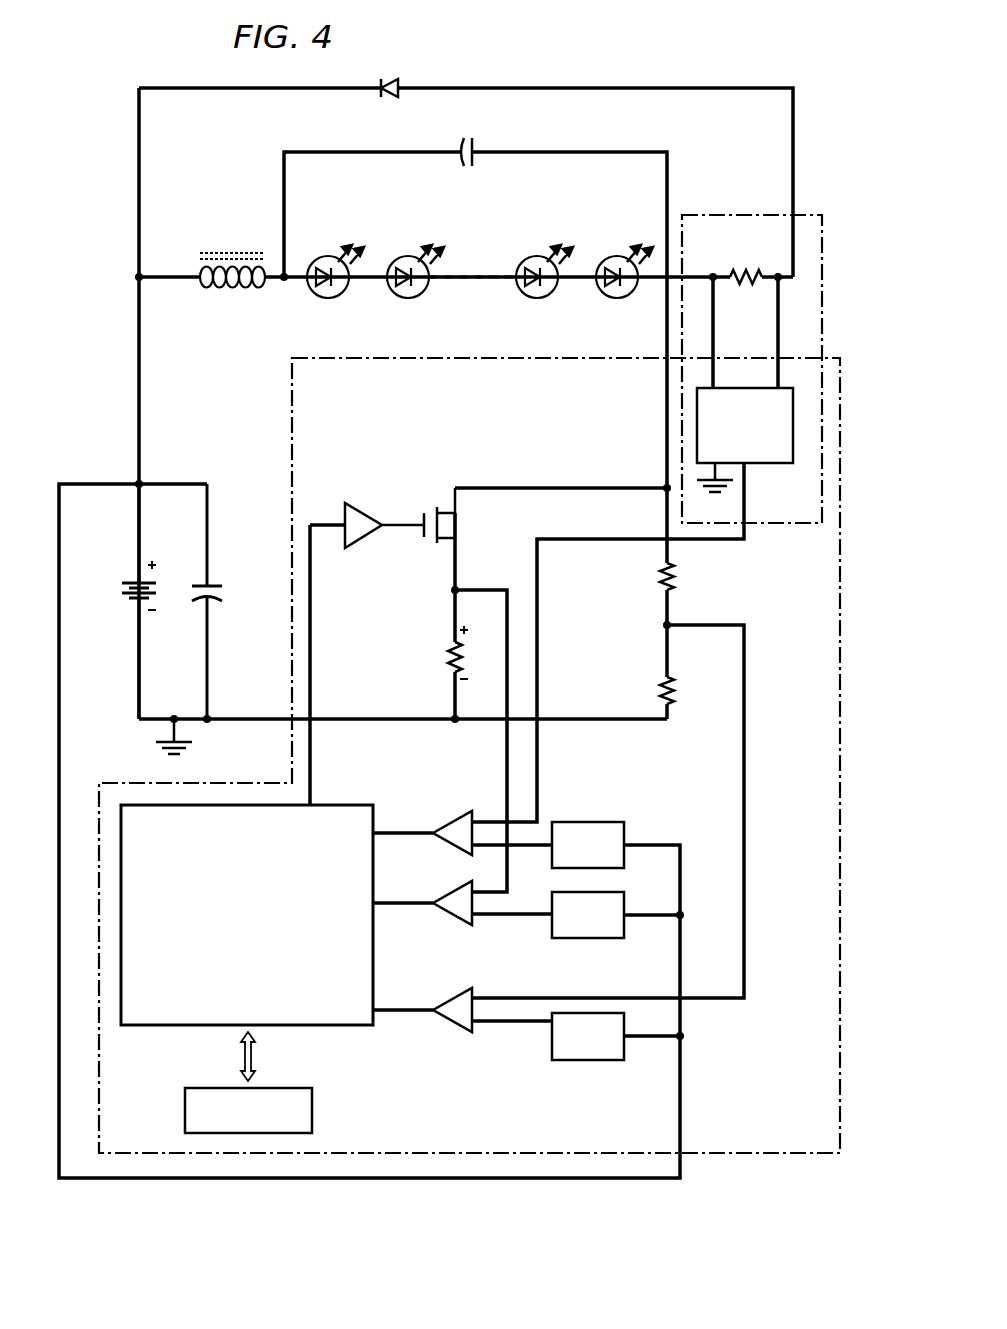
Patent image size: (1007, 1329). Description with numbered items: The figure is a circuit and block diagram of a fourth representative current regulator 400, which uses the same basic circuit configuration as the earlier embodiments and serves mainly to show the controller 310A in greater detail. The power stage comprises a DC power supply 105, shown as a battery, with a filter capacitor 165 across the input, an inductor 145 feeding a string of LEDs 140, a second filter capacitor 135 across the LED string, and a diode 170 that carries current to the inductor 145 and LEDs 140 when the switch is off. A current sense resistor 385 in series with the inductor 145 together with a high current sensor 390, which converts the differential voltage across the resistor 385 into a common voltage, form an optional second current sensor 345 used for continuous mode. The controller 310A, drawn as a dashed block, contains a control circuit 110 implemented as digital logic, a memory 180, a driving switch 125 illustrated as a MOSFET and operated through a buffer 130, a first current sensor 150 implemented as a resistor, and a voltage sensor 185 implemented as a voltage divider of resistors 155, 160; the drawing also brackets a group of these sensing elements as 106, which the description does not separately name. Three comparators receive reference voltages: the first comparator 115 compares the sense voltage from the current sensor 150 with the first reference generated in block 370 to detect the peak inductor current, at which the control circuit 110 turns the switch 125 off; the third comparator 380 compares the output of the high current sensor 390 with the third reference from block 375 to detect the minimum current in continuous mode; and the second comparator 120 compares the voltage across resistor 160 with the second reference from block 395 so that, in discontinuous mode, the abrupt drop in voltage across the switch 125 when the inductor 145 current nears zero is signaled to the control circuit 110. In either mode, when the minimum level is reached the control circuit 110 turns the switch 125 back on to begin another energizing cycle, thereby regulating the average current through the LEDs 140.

The current regulator 400 is at (93, 211).
The diode 170 is at (395, 83).
The filter capacitor 135 is at (478, 150).
The inductor 145 is at (205, 268).
The LEDs 140 is at (640, 306).
The second current sensor 345 is at (718, 214).
The current sense resistor 385 is at (748, 270).
The high current sensor 390 is at (777, 465).
The controller 310A is at (292, 392).
The DC power supply 105 is at (133, 582).
The filter capacitor 165 is at (215, 585).
The buffer 130 is at (365, 540).
The driving switch 125 is at (452, 530).
The first current sensor 150 is at (448, 660).
The resistor 155 is at (676, 576).
The resistor 160 is at (673, 688).
The voltage sensor 185 is at (655, 563).
The sensing network 106 is at (677, 726).
The control circuit 110 is at (323, 805).
The memory 180 is at (313, 1114).
The third comparator 380 is at (448, 848).
The first comparator 115 is at (448, 918).
The second comparator 120 is at (455, 1028).
The third predetermined voltage reference generator 375 is at (556, 868).
The first predetermined voltage reference generator 370 is at (560, 939).
The second predetermined voltage reference generator 395 is at (560, 1061).